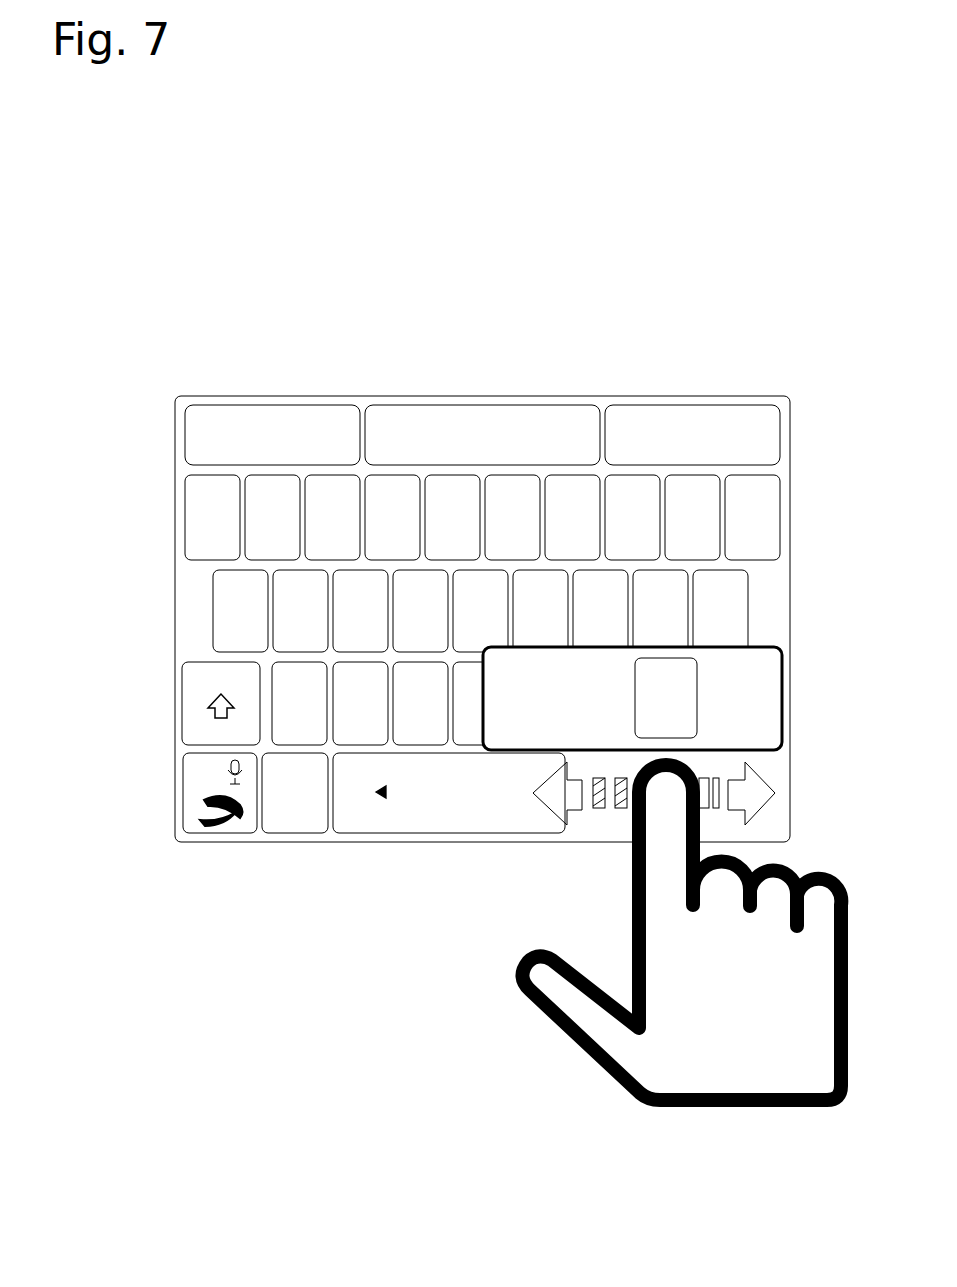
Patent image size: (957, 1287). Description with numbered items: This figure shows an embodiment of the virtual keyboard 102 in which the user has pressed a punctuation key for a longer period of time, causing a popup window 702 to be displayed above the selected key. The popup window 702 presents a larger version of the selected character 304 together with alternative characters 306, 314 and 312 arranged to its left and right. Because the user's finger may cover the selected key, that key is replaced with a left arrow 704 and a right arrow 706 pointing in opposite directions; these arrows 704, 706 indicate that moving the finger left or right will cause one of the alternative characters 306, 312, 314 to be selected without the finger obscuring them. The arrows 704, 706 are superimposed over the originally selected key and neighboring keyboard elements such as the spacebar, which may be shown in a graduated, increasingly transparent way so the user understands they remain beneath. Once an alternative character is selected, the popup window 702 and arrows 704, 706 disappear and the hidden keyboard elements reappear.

The virtual keyboard 102 is at (148, 570).
The popup window 702 is at (783, 667).
The left arrow 704 is at (547, 803).
The right arrow 706 is at (758, 780).
The alternative character 306 is at (526, 690).
The alternative character 314 is at (596, 690).
The selected character 304 is at (667, 703).
The alternative character 312 is at (736, 700).